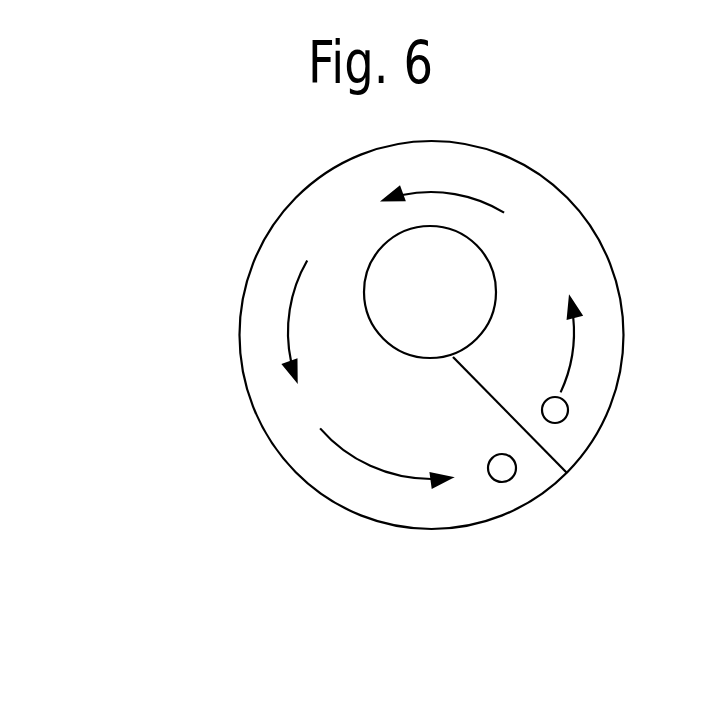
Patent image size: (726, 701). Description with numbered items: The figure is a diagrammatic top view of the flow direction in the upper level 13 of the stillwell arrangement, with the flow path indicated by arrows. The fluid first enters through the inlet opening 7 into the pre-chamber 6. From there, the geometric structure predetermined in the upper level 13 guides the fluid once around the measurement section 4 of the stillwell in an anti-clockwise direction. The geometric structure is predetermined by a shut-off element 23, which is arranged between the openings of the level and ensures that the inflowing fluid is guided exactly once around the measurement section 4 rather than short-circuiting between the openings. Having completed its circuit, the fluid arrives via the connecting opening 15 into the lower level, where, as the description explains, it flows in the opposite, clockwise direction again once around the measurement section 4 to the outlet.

The measurement section 4 is at (382, 287).
The pre-chamber 6 is at (533, 263).
The inlet opening 7 is at (556, 411).
The upper level 13 is at (258, 440).
The connecting opening 15 is at (502, 468).
The shut-off element 23 is at (482, 380).